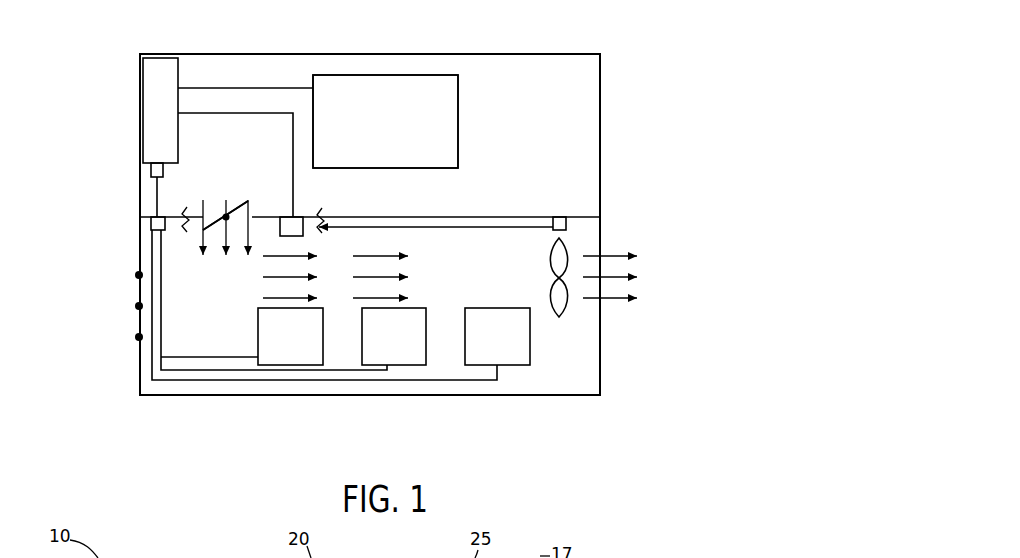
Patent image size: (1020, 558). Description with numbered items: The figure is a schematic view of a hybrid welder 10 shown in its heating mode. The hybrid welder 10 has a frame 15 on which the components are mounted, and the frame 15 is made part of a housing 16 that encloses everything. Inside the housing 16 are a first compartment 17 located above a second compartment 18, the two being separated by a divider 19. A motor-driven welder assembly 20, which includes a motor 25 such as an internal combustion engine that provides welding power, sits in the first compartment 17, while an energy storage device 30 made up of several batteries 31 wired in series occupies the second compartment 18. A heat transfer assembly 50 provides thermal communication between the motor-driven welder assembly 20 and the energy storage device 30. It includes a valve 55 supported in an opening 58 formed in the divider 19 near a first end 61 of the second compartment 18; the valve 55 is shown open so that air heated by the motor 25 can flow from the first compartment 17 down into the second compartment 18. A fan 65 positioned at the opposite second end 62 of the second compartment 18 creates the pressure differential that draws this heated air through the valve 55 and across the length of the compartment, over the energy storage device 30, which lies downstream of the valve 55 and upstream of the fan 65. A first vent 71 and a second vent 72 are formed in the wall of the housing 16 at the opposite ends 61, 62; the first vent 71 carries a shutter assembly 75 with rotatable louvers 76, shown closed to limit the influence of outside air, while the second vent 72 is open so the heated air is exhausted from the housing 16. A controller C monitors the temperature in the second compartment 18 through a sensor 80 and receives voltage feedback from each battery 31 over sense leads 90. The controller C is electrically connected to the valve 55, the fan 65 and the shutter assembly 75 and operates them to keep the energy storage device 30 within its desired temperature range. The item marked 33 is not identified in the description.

The hybrid welder 10 is at (110, 52).
The frame 15 is at (603, 116).
The housing 16 is at (601, 148).
The first compartment 17 is at (516, 58).
The second compartment 18 is at (553, 395).
The divider 19 is at (440, 214).
The motor-driven welder assembly 20 is at (353, 67).
The motor 25 is at (418, 97).
The energy storage device 30 is at (394, 368).
The battery 31 is at (301, 349).
The coolant inlet connector 33 is at (150, 221).
The heat transfer assembly 50 is at (191, 204).
The valve 55 is at (224, 214).
The opening 58 is at (248, 201).
The first end 61 is at (139, 371).
The second end 62 is at (601, 371).
The fan 65 is at (552, 251).
The first vent 71 is at (139, 275).
The second vent 72 is at (615, 254).
The shutter assembly 75 is at (135, 317).
The louver 76 is at (139, 290).
The sensor 80 is at (280, 233).
The sense lead 90 is at (191, 383).
The controller C is at (180, 64).